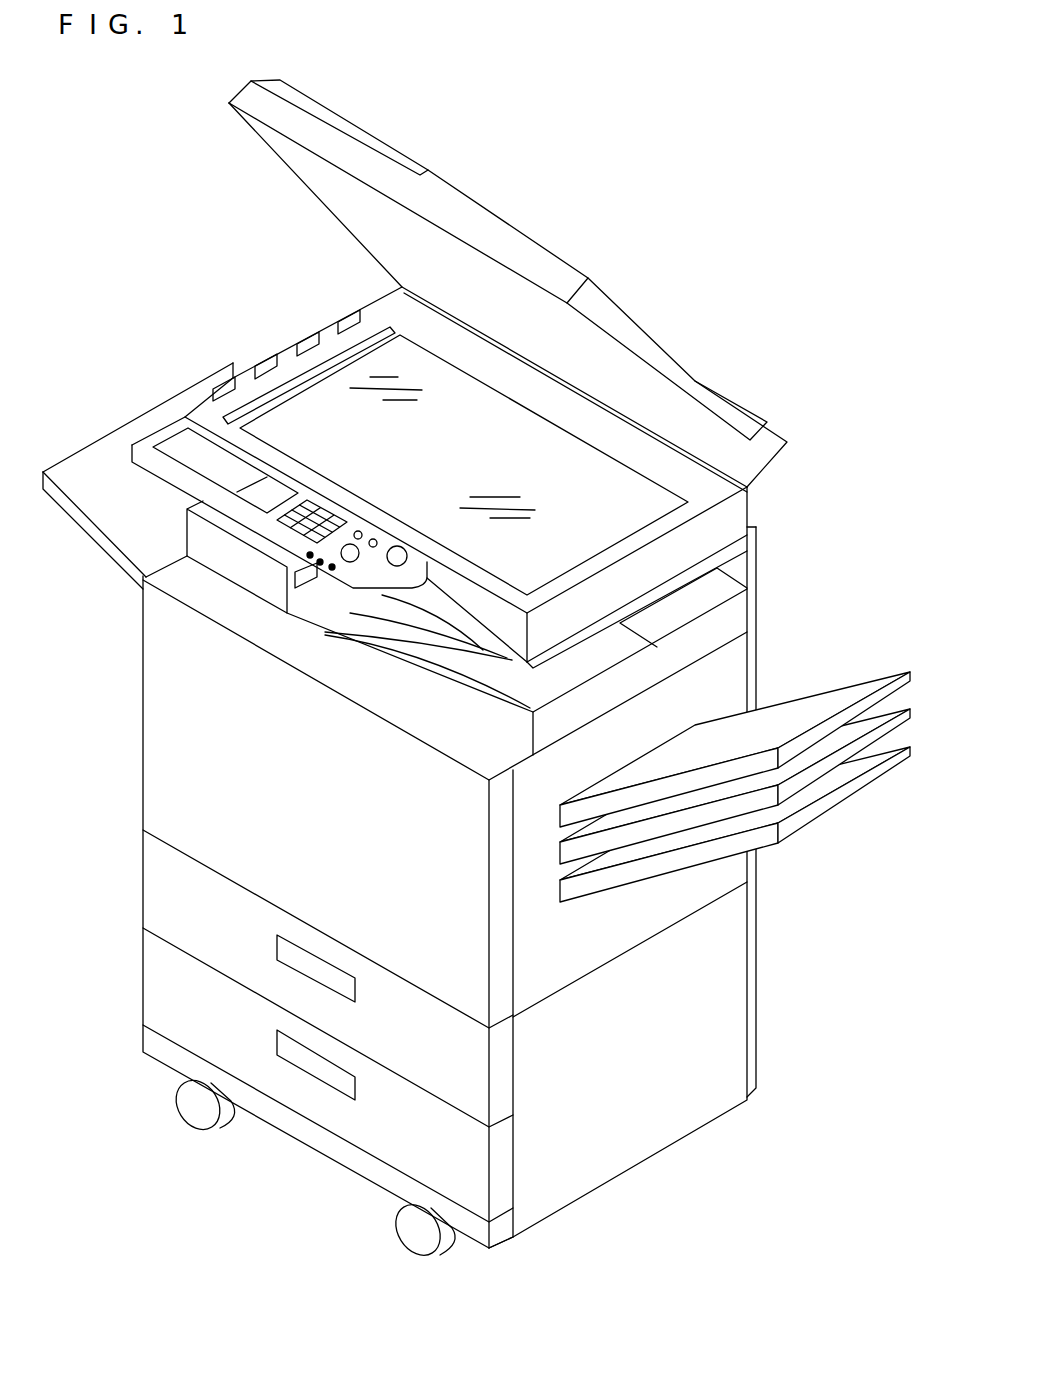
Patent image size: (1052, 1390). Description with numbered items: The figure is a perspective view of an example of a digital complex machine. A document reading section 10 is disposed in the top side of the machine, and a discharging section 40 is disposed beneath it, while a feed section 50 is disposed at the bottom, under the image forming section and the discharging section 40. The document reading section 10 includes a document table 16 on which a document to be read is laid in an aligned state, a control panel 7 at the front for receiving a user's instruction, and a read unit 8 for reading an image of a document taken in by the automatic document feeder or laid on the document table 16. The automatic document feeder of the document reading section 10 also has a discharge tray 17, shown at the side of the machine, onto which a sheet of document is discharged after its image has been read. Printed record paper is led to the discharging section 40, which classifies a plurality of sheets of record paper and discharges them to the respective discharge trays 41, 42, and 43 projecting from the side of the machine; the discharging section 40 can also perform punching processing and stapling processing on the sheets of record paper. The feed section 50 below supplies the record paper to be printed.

The document reading section 10 is at (476, 671).
The control panel 7 is at (165, 430).
The read unit 8 is at (758, 503).
The document table 16 is at (302, 405).
The discharge tray 17 is at (93, 452).
The discharging section 40 is at (138, 786).
The discharge tray 41 is at (778, 712).
The discharge tray 42 is at (855, 730).
The discharge tray 43 is at (833, 800).
The feed section 50 is at (134, 909).